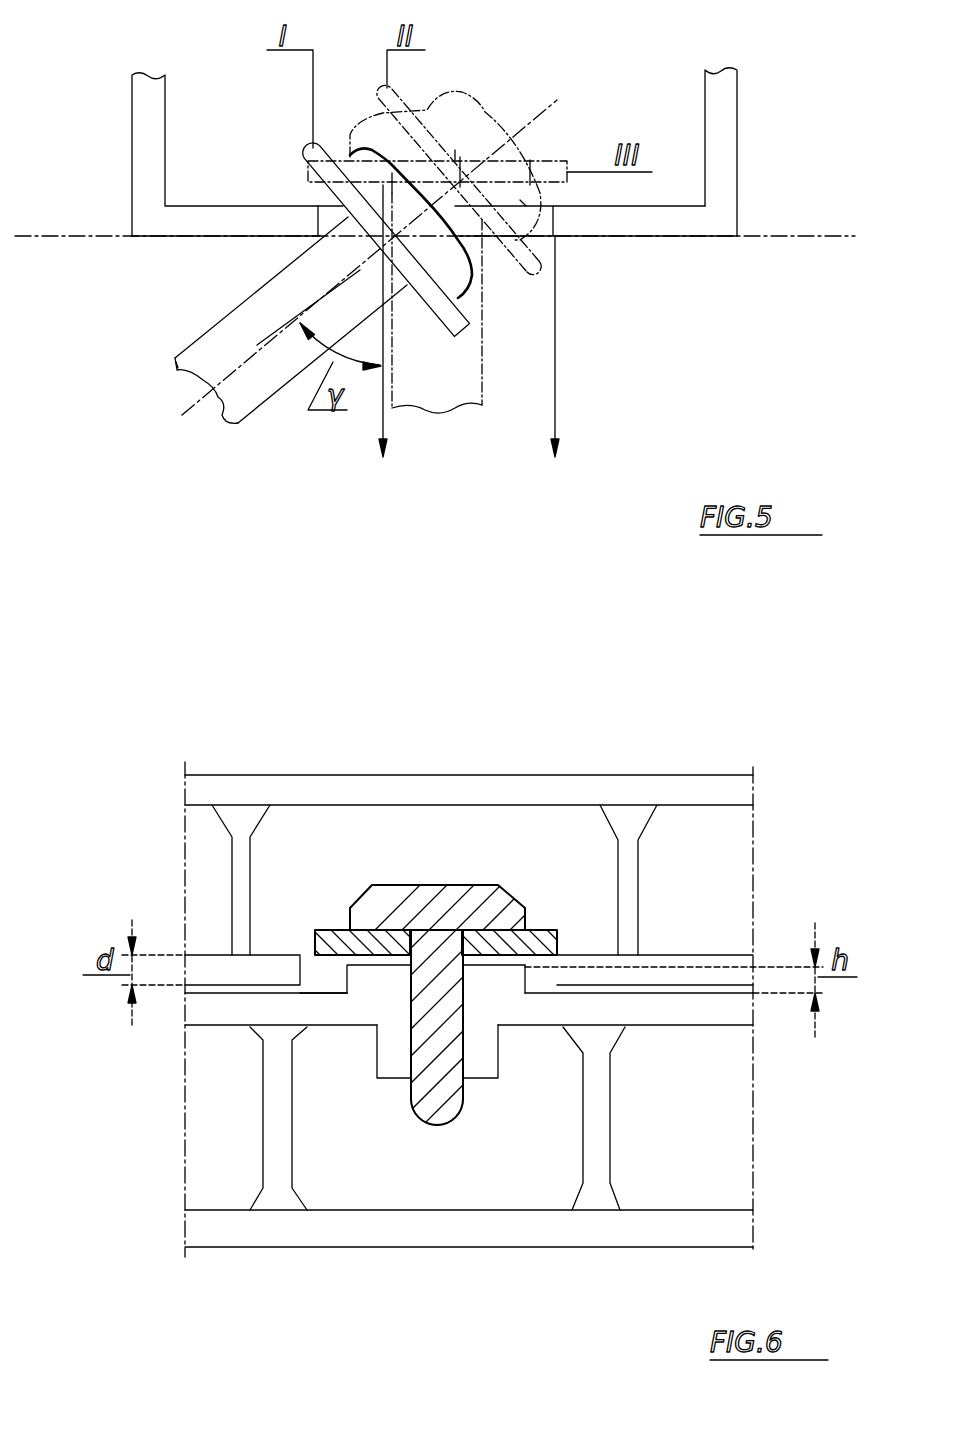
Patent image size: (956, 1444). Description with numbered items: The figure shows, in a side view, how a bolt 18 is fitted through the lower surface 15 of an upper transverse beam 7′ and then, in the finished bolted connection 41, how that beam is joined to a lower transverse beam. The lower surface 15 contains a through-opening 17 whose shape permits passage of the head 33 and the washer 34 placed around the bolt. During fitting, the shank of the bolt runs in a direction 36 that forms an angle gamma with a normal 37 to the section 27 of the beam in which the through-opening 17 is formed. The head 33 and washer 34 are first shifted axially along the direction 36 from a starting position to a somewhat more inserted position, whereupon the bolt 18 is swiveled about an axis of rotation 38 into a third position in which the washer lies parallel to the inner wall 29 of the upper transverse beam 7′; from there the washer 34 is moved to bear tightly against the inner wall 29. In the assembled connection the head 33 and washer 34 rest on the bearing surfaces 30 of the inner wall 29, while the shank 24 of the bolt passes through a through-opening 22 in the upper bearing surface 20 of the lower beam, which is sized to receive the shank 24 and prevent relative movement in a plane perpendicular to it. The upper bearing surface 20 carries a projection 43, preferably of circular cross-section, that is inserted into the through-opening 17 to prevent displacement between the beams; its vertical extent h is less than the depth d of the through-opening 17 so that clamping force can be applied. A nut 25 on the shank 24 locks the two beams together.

In FIG. 5, the upper transverse beam 7′ is at (735, 150).
In FIG. 6, the upper transverse beam 7′ is at (346, 776).
In FIG. 5, the lower surface 15 is at (670, 220).
In FIG. 5, the through-opening 17 is at (522, 213).
In FIG. 6, the through-opening 17 is at (540, 928).
In FIG. 5, the bolt 18 is at (327, 280).
In FIG. 6, the bolt 18 is at (400, 1099).
In FIG. 6, the upper bearing surface 20 is at (215, 988).
In FIG. 6, the through-opening 22 is at (410, 993).
In FIG. 6, the shank 24 is at (445, 1003).
In FIG. 6, the nut 25 is at (482, 1063).
In FIG. 5, the section of the beam 27 is at (713, 235).
In FIG. 5, the inner wall 29 is at (240, 206).
In FIG. 6, the bearing surfaces 30 is at (533, 960).
In FIG. 5, the head 33 is at (475, 272).
In FIG. 5, the washer 34 is at (482, 340).
In FIG. 5, the direction 36 is at (233, 380).
In FIG. 5, the normal 37 is at (506, 378).
In FIG. 5, the axis of rotation 38 is at (459, 185).
In FIG. 6, the bolted connection 41 is at (530, 872).
In FIG. 6, the projection 43 is at (505, 983).